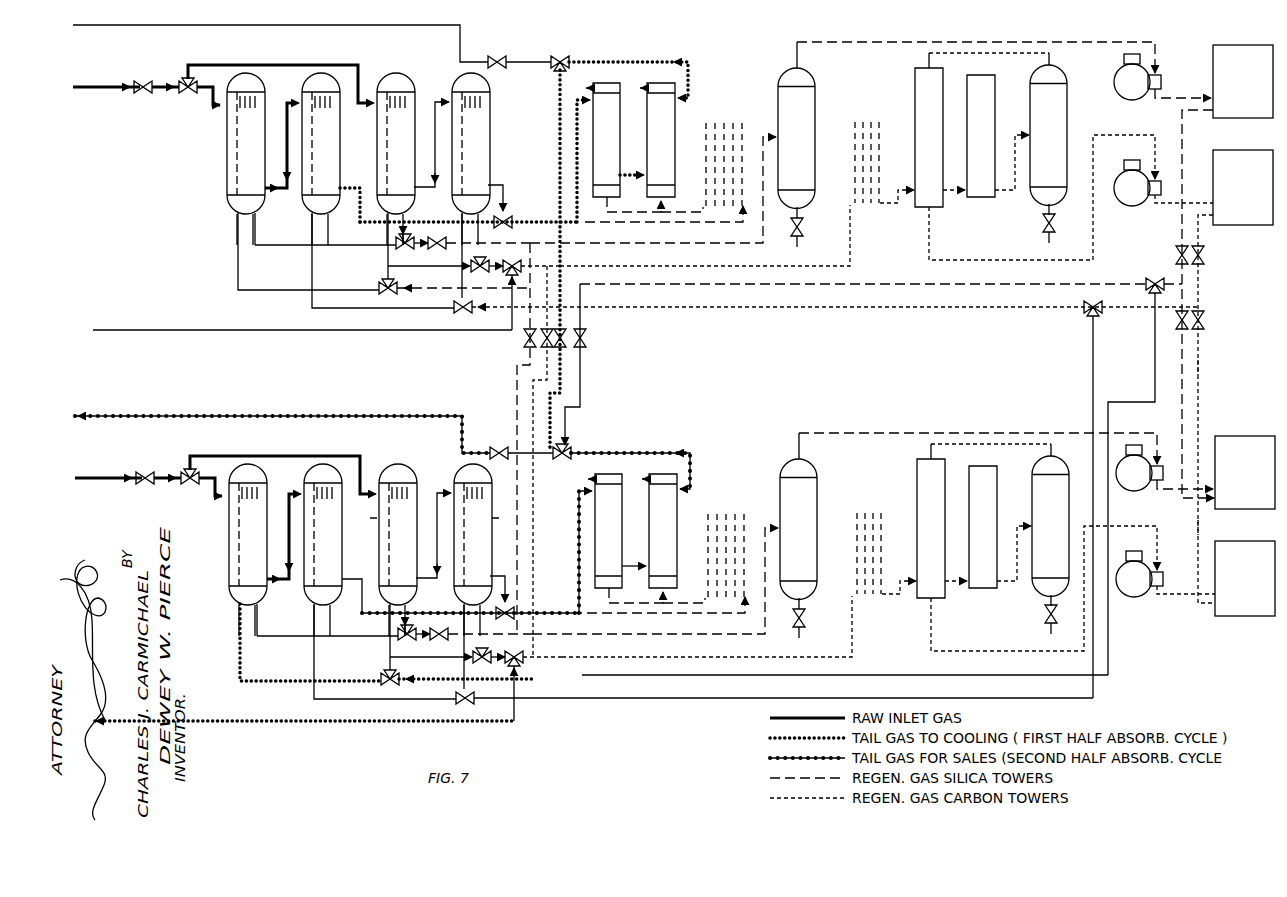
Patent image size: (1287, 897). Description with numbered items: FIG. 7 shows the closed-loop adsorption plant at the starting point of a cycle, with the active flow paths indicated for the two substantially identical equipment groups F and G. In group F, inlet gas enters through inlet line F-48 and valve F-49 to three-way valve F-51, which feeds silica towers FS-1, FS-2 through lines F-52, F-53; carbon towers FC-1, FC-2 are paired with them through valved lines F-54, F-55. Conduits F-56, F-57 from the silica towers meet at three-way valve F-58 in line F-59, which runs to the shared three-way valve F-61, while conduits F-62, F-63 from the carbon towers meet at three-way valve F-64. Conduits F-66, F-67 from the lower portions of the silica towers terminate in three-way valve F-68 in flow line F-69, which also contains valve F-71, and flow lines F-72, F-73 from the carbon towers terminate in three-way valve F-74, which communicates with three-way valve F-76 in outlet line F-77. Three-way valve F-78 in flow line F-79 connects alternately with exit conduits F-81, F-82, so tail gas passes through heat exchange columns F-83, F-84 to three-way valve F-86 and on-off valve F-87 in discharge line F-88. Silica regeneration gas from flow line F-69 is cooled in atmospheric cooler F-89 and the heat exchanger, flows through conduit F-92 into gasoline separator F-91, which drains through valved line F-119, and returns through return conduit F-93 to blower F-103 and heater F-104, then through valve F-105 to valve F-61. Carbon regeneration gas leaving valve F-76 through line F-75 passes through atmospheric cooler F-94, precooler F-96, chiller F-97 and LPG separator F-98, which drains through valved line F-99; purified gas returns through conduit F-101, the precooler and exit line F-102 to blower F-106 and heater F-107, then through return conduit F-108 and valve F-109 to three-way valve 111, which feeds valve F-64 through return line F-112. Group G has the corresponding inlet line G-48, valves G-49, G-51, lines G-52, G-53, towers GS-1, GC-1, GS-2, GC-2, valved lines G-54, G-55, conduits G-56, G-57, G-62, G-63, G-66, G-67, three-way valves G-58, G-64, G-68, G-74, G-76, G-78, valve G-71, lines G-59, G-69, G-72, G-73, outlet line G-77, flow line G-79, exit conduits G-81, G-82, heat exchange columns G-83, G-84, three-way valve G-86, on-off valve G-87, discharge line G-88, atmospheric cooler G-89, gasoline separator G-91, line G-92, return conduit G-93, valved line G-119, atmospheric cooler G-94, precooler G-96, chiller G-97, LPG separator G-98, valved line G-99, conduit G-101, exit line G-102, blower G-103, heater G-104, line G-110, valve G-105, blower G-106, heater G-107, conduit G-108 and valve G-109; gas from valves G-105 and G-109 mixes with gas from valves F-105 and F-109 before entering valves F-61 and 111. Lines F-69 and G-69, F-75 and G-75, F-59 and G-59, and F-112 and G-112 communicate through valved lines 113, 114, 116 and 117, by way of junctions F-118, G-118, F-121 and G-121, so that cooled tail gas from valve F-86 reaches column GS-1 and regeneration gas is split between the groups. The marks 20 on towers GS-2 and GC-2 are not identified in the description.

The inlet line F-48 is at (138, 86).
The valve F-49 is at (143, 80).
The three-way valve F-51 is at (180, 92).
The line F-52 is at (212, 106).
The line F-53 is at (300, 65).
The silica tower FS-1 is at (246, 159).
The carbon tower FC-1 is at (321, 159).
The silica tower FS-2 is at (396, 159).
The carbon tower FC-2 is at (471, 159).
The valved line F-54 is at (290, 98).
The valved line F-55 is at (437, 98).
The exit conduit F-81 is at (360, 186).
The flow line F-79 is at (552, 220).
The three-way valve F-78 is at (508, 216).
The exit conduit F-82 is at (503, 184).
The conduit F-67 is at (406, 222).
The conduit F-66 is at (257, 221).
The flow line F-72 is at (312, 233).
The conduit F-56 is at (238, 246).
The conduit F-62 is at (312, 271).
The outlet line F-77 is at (258, 330).
The conduit F-57 is at (395, 237).
The valve F-71 is at (411, 247).
The flow line F-73 is at (437, 236).
The junction F-118 is at (530, 243).
The flow line F-69 is at (640, 243).
The three-way valve F-68 is at (386, 259).
The three-way valve F-76 is at (516, 256).
The junction F-121 is at (549, 266).
The line F-75 is at (746, 265).
The conduit F-63 is at (462, 278).
The three-way valve F-64 is at (457, 312).
The return line F-112 is at (918, 305).
The three-way valve F-58 is at (382, 293).
The line F-59 is at (918, 283).
The three-way valve F-74 is at (512, 283).
The discharge line F-88 is at (462, 25).
The on-off valve F-87 is at (499, 56).
The three-way valve F-86 is at (560, 58).
The heat exchange column F-83 is at (619, 152).
The heat exchange column F-84 is at (671, 147).
The conduit F-92 is at (682, 223).
The atmospheric cooler F-89 is at (712, 124).
The gasoline separator F-91 is at (796, 130).
The valved line F-119 is at (801, 228).
The return conduit F-93 is at (975, 40).
The atmospheric cooler F-94 is at (855, 125).
The precooler F-96 is at (929, 130).
The chiller F-97 is at (986, 136).
The LPG separator F-98 is at (1048, 134).
The conduit F-101 is at (976, 53).
The valved line F-99 is at (1053, 223).
The exit line F-102 is at (1006, 259).
The blower F-103 is at (1137, 77).
The heater F-104 is at (1214, 81).
The valve F-105 is at (1180, 254).
The blower F-106 is at (1137, 183).
The heater F-107 is at (1214, 187).
The return conduit F-108 is at (1200, 240).
The valve F-109 is at (1202, 258).
The three-way valve F-61 is at (1152, 276).
The three-way valve 111 is at (1090, 300).
The valved line 113 is at (527, 364).
The valved line 114 is at (532, 382).
The valved line 116 is at (565, 372).
The valved line 117 is at (582, 385).
The heating coils 20 is at (437, 518).
The inlet line G-48 is at (108, 469).
The valve G-49 is at (132, 464).
The three-way valve G-51 is at (148, 489).
The line G-52 is at (195, 491).
The line G-53 is at (283, 467).
The silica tower GS-1 is at (248, 550).
The carbon tower GC-1 is at (323, 550).
The silica tower GS-2 is at (398, 550).
The carbon tower GC-2 is at (473, 550).
The valved line G-54 is at (284, 521).
The valved line G-55 is at (434, 519).
The exit conduit G-81 is at (360, 582).
The flow line G-79 is at (472, 600).
The three-way valve G-78 is at (526, 592).
The exit conduit G-82 is at (518, 571).
The conduit G-67 is at (431, 615).
The conduit G-66 is at (280, 618).
The flow line G-72 is at (327, 625).
The conduit G-56 is at (288, 642).
The conduit G-62 is at (361, 651).
The outlet line G-77 is at (304, 713).
The conduit G-57 is at (380, 629).
The valve G-71 is at (427, 645).
The flow line G-73 is at (441, 625).
The junction G-118 is at (492, 626).
The flow line G-69 is at (655, 582).
The three-way valve G-68 is at (409, 637).
The three-way valve G-76 is at (498, 651).
The junction G-121 is at (571, 648).
The conduit G-75 is at (707, 626).
The conduit G-63 is at (443, 646).
The three-way valve G-64 is at (444, 704).
The return line G-112 is at (783, 687).
The three-way valve G-58 is at (440, 683).
The line G-59 is at (845, 665).
The three-way valve G-74 is at (497, 693).
The discharge line G-88 is at (282, 425).
The on-off valve G-87 is at (514, 443).
The three-way valve G-86 is at (599, 458).
The heat exchange column G-83 is at (621, 543).
The heat exchange column G-84 is at (673, 538).
The line G-92 is at (666, 613).
The atmospheric cooler G-89 is at (737, 546).
The gasoline separator G-91 is at (798, 521).
The valved line G-119 is at (823, 623).
The return conduit G-93 is at (978, 437).
The atmospheric cooler G-94 is at (886, 542).
The precooler G-96 is at (931, 521).
The chiller G-97 is at (988, 527).
The LPG separator G-98 is at (1050, 525).
The conduit G-101 is at (991, 453).
The valved line G-99 is at (1032, 619).
The exit line G-102 is at (1044, 588).
The blower G-103 is at (1139, 468).
The heater G-104 is at (1216, 472).
The valve G-105 is at (1187, 328).
The blower G-106 is at (1139, 574).
The heater G-107 is at (1216, 578).
The conduit G-108 is at (1200, 368).
The valve G-109 is at (1203, 322).
The line G-110 is at (1200, 529).